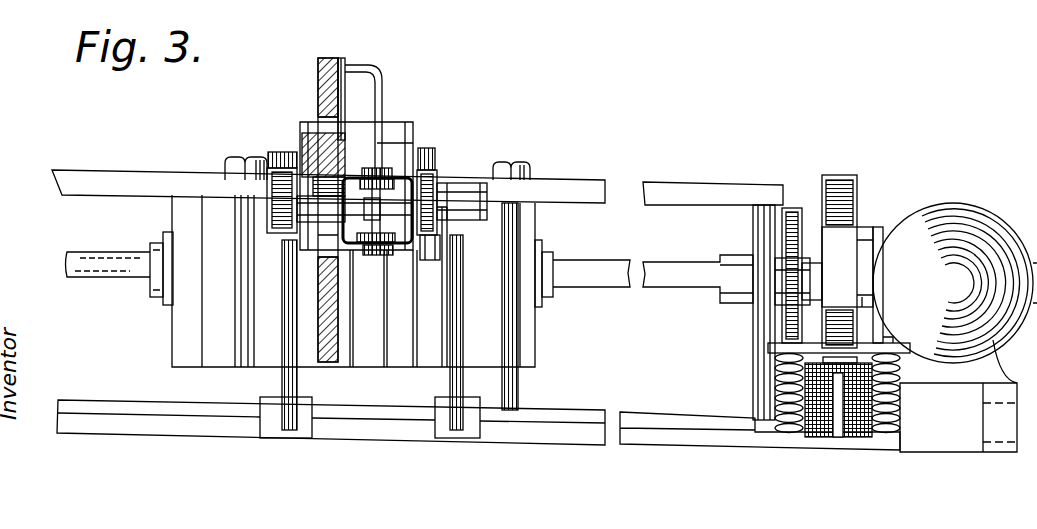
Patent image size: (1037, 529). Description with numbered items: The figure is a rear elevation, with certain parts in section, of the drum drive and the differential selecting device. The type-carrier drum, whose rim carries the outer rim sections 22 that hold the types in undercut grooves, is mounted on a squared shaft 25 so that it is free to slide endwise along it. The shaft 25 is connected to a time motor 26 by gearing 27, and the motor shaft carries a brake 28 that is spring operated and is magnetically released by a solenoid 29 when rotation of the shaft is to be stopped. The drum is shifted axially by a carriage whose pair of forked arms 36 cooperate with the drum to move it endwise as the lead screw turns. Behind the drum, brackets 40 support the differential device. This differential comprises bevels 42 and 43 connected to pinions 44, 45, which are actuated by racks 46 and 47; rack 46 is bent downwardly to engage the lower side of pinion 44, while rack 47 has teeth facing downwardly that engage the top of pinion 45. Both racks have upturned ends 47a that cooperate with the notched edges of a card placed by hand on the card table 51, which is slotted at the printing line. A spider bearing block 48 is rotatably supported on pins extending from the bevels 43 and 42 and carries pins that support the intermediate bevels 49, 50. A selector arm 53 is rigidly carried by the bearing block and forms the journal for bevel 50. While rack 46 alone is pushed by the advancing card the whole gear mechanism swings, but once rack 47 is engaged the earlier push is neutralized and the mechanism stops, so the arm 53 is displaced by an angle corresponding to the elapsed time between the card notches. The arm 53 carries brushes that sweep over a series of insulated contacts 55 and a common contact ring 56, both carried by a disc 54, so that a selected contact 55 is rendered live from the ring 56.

The outer rim sections 22 is at (208, 352).
The squared shaft 25 is at (97, 258).
The time motor 26 is at (953, 283).
The gearing 27 is at (802, 218).
The brake 28 is at (852, 192).
The solenoid 29 is at (852, 427).
The forked arms 36 is at (160, 293).
The brackets 40 is at (312, 225).
The bevel 42 is at (300, 265).
The bevel 43 is at (435, 163).
The pinion 44 is at (470, 207).
The pinion 45 is at (268, 153).
The rack 46 is at (427, 262).
The rack 47 is at (285, 147).
The upturned ends 47a is at (280, 157).
The spider bearing block 48 is at (352, 240).
The intermediate bevel 49 is at (400, 252).
The intermediate bevel 50 is at (395, 180).
The card table 51 is at (670, 185).
The selector arm 53 is at (383, 66).
The disc 54 is at (318, 72).
The insulated contacts 55 is at (343, 58).
The common contact ring 56 is at (340, 133).